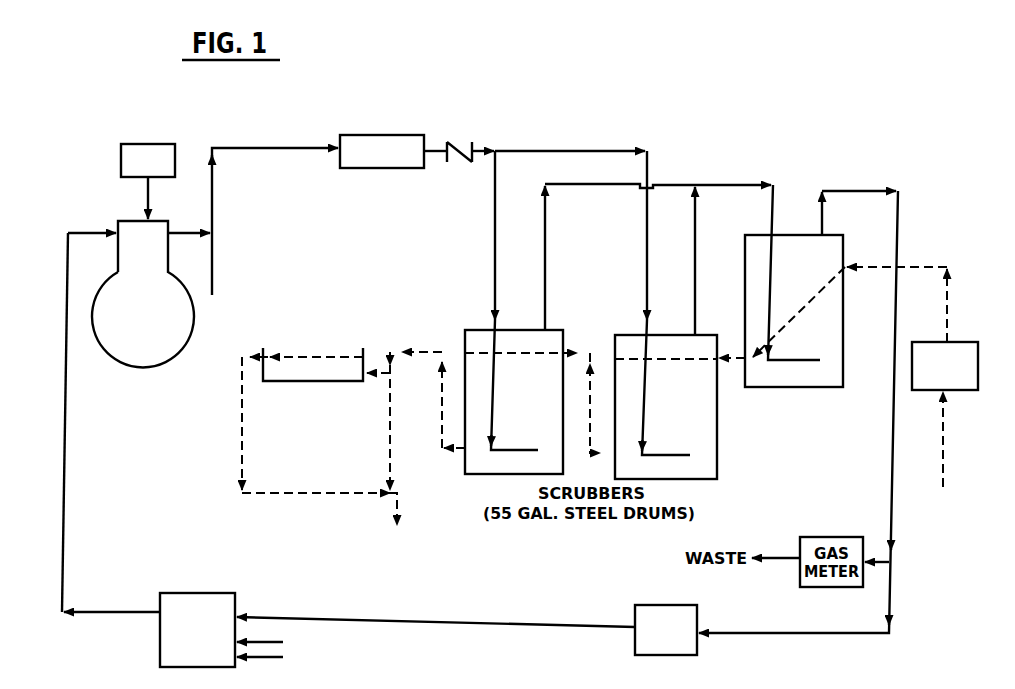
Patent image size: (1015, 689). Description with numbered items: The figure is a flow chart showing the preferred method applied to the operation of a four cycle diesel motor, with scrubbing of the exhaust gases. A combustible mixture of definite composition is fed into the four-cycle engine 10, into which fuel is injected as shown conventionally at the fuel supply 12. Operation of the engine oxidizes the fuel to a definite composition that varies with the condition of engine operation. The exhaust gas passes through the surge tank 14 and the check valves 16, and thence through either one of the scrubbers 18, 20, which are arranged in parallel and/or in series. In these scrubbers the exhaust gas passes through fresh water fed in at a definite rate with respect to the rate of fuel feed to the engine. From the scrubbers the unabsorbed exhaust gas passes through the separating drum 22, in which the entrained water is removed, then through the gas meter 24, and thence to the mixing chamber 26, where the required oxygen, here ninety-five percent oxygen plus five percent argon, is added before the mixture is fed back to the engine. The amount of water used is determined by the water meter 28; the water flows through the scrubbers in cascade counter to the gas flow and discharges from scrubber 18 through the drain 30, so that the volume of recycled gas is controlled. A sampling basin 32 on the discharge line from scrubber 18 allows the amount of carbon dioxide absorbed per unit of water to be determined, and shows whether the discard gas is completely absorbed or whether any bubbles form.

The 4-cycle engine 10 is at (195, 315).
The fuel injection 12 is at (142, 143).
The surge tank 14 is at (368, 134).
The check valves 16 is at (457, 142).
The scrubber 18 is at (490, 474).
The scrubber 20 is at (717, 455).
The separating drum 22 is at (843, 365).
The gas meter 24 is at (669, 605).
The mixing chamber 26 is at (183, 593).
The water meter 28 is at (968, 342).
The drain 30 is at (397, 518).
The sampling basin 32 is at (290, 365).